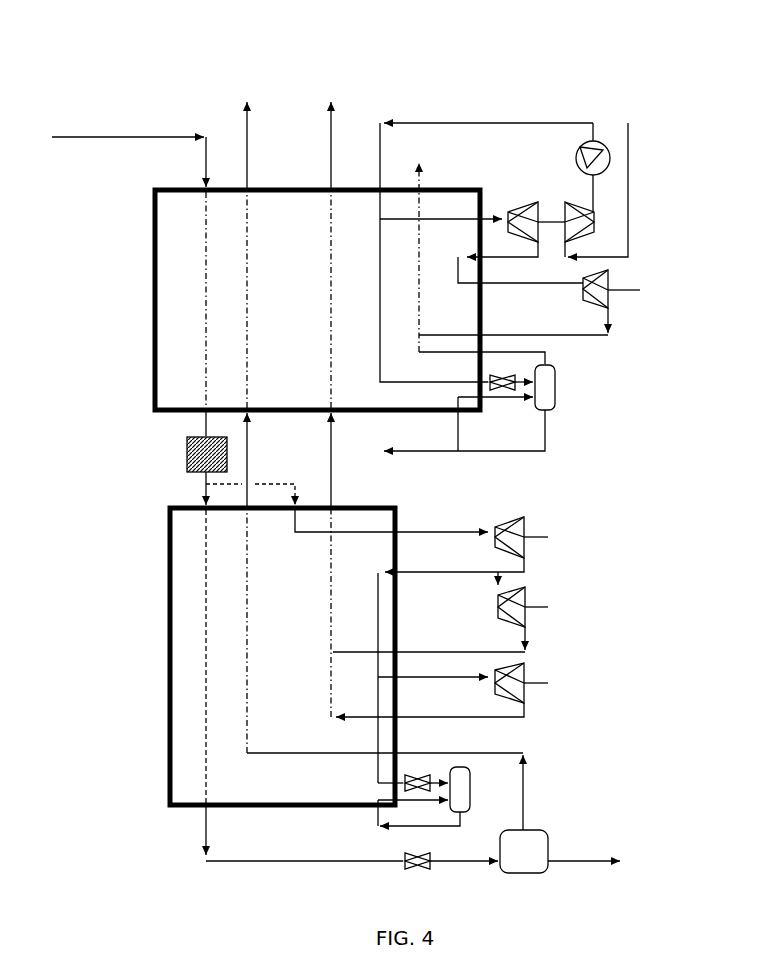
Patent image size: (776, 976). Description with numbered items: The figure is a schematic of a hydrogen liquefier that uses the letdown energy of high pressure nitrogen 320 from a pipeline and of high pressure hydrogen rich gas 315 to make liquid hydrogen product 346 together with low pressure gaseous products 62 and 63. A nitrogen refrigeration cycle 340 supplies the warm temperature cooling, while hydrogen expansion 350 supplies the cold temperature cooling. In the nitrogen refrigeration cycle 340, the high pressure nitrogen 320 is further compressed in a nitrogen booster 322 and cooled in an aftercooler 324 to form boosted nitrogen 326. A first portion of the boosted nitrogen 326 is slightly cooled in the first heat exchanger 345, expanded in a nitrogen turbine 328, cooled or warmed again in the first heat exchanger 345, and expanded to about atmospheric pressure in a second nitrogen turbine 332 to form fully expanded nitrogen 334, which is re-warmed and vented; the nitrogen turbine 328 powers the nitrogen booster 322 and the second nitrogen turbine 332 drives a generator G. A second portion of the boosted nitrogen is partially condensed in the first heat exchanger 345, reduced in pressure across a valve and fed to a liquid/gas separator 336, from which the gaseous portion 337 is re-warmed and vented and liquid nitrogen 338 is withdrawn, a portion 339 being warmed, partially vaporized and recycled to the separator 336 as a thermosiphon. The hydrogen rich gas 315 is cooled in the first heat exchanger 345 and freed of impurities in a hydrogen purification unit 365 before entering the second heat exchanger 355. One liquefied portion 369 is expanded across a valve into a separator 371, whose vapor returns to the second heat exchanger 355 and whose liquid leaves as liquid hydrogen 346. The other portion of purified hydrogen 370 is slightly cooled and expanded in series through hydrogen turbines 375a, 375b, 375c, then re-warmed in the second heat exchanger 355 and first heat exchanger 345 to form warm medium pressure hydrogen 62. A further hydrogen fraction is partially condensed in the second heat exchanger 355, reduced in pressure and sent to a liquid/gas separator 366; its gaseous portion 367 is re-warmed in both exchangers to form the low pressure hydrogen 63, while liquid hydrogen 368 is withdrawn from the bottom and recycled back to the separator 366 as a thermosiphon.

The nitrogen refrigeration cycle 340 is at (562, 98).
The hydrogen expansion 350 is at (630, 603).
The high pressure hydrogen rich gas 315 is at (137, 137).
The low pressure gaseous product 63 is at (247, 162).
The warm medium pressure hydrogen 62 is at (331, 160).
The first heat exchanger 345 is at (155, 322).
The second heat exchanger 355 is at (170, 608).
The boosted nitrogen 326 is at (416, 123).
The aftercooler 324 is at (580, 152).
The high pressure nitrogen 320 is at (628, 192).
The nitrogen turbine 328 is at (526, 200).
The nitrogen booster 322 is at (588, 204).
The second nitrogen turbine 332 is at (611, 276).
The gaseous portion 337 is at (421, 177).
The fully expanded nitrogen 334 is at (532, 335).
The liquid/gas separator 336 is at (557, 395).
The liquid nitrogen 338 is at (444, 451).
The portion 339 is at (514, 400).
The hydrogen purification unit 365 is at (187, 452).
The purified hydrogen 370 is at (474, 532).
The hydrogen turbine 375a is at (539, 526).
The hydrogen turbine 375b is at (541, 600).
The hydrogen turbine 375c is at (541, 677).
The gaseous portion 367 is at (412, 753).
The liquid/gas separator 366 is at (471, 797).
The liquid hydrogen 368 is at (428, 827).
The liquefied portion 369 is at (292, 861).
The separator 371 is at (548, 834).
The liquid hydrogen product 346 is at (578, 861).